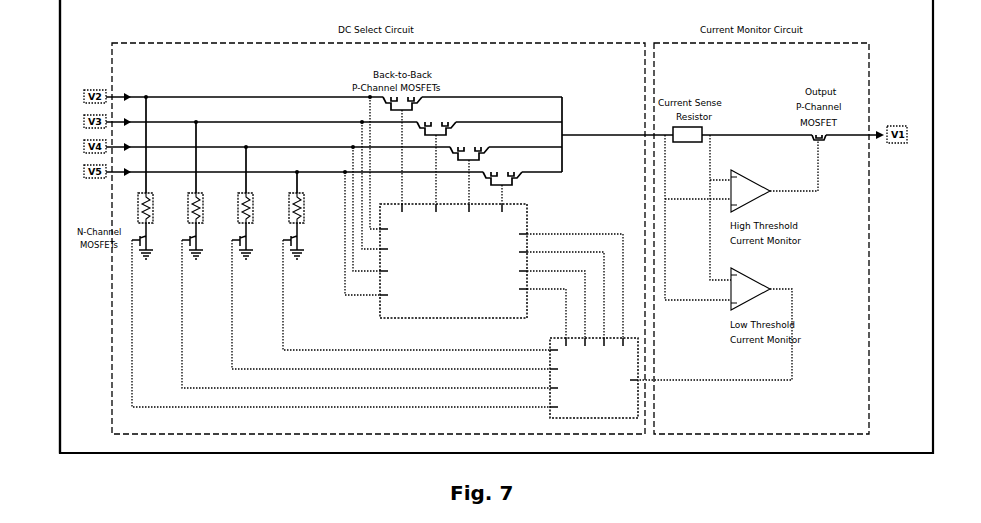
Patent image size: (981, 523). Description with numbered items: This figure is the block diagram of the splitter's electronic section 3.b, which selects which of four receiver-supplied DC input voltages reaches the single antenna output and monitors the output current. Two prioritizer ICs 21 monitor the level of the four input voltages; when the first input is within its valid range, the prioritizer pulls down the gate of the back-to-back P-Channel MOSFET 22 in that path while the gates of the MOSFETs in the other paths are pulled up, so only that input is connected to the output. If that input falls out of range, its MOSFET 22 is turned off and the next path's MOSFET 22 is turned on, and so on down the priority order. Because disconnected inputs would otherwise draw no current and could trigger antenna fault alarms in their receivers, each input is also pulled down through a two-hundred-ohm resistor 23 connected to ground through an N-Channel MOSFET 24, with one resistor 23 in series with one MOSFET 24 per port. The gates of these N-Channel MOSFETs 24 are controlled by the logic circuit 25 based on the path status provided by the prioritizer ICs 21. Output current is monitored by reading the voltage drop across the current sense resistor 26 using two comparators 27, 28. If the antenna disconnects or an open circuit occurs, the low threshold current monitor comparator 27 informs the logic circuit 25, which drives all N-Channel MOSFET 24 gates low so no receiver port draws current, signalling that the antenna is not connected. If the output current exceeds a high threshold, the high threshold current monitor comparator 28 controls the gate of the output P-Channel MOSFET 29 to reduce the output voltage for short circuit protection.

The electronic section 3.b is at (60, 83).
The prioritizer ICs 21 is at (390, 318).
The back-to-back P-Channel MOSFET 22 is at (416, 111).
The 200-ohm resistor 23 is at (153, 196).
The N-Channel MOSFET 24 is at (134, 250).
The logic circuit 25 is at (640, 418).
The current sense resistor 26 is at (676, 142).
The low threshold current monitor comparator 27 is at (745, 277).
The high threshold current monitor comparator 28 is at (742, 178).
The output P-Channel MOSFET 29 is at (826, 140).